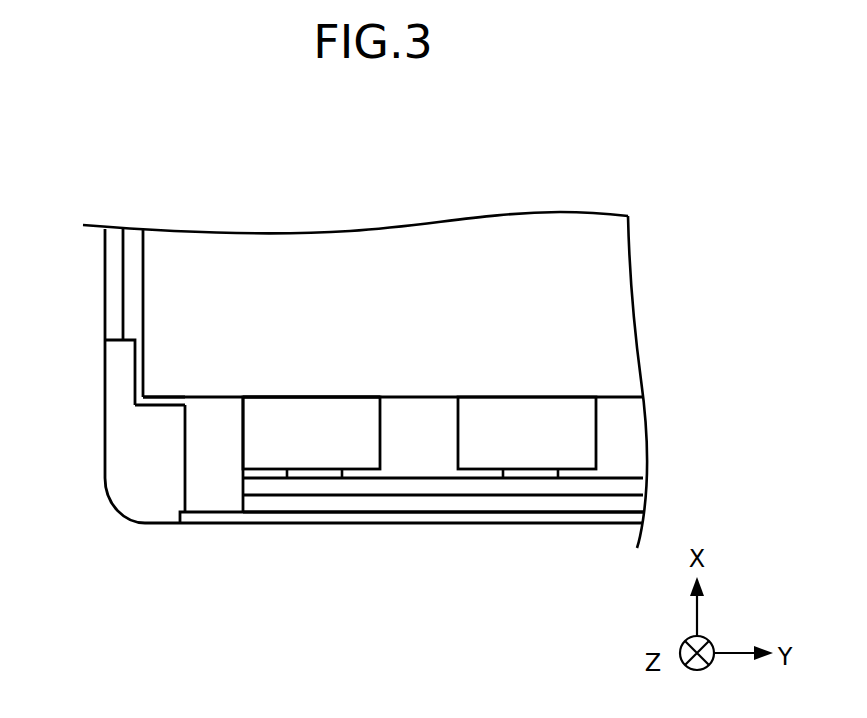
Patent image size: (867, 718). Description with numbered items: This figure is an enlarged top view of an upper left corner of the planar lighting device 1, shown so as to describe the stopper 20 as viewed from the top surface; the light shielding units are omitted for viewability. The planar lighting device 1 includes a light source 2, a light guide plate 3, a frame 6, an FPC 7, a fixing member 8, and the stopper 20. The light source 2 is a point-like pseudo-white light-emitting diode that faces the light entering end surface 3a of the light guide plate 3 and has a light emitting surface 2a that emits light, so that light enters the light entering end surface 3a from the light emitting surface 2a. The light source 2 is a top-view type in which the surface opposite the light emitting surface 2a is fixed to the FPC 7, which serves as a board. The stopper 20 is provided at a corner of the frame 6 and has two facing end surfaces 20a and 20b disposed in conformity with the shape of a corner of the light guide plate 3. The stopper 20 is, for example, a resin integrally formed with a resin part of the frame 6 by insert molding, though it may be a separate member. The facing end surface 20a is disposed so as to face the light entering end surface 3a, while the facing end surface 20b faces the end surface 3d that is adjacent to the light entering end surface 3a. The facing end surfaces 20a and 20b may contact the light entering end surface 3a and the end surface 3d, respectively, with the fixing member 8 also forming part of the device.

The planar lighting device 1 is at (108, 171).
The light source 2 is at (419, 491).
The light emitting surface 2a is at (360, 397).
The light guide plate 3 is at (340, 285).
The light entering end surface 3a is at (185, 396).
The end surface 3d is at (143, 263).
The frame 6 is at (103, 318).
The FPC 7 is at (353, 488).
The fixing member 8 is at (300, 503).
The stopper 20 is at (333, 379).
The facing end surface 20a is at (160, 405).
The facing end surface 20b is at (143, 355).